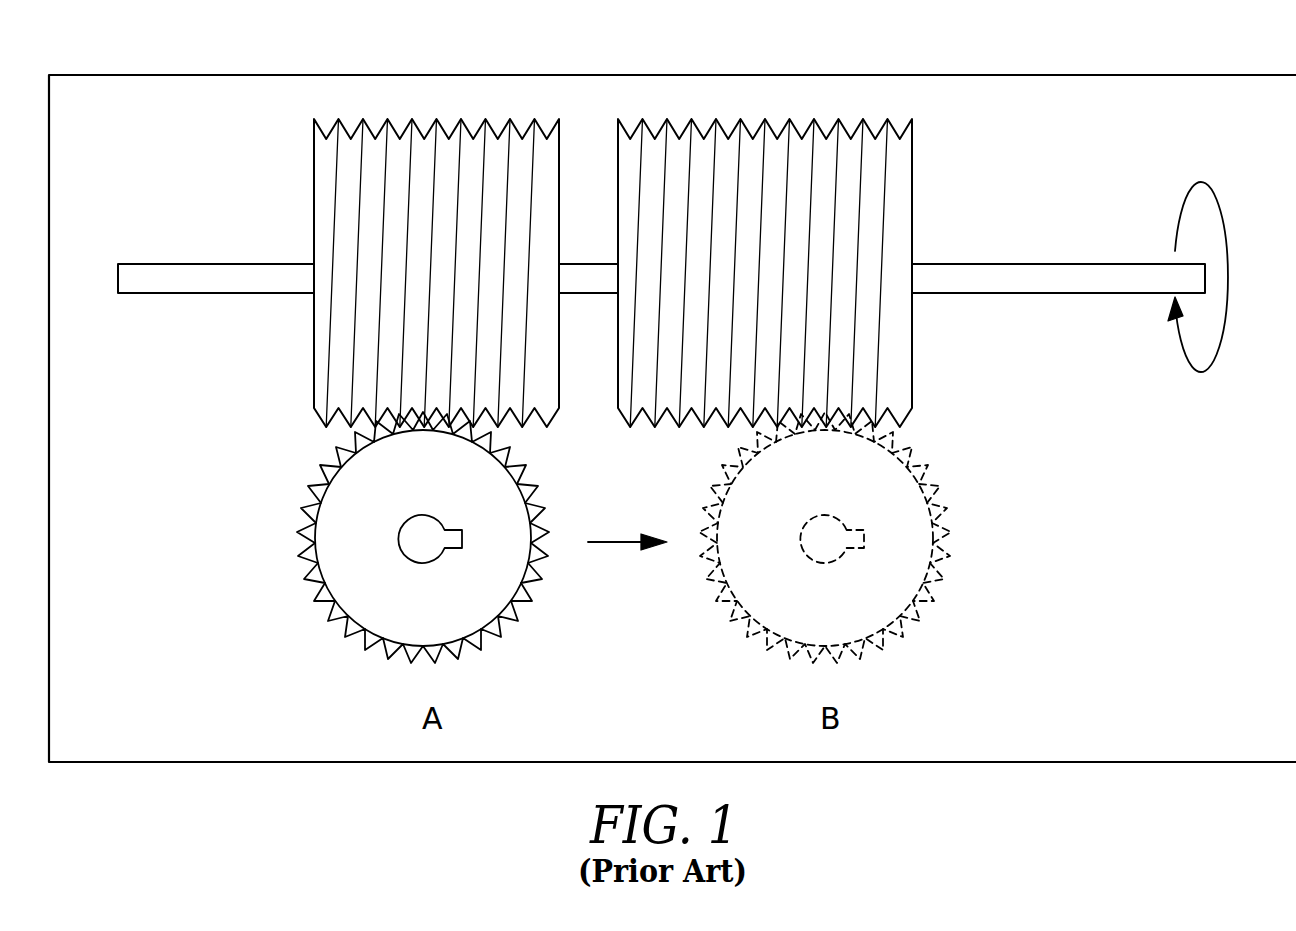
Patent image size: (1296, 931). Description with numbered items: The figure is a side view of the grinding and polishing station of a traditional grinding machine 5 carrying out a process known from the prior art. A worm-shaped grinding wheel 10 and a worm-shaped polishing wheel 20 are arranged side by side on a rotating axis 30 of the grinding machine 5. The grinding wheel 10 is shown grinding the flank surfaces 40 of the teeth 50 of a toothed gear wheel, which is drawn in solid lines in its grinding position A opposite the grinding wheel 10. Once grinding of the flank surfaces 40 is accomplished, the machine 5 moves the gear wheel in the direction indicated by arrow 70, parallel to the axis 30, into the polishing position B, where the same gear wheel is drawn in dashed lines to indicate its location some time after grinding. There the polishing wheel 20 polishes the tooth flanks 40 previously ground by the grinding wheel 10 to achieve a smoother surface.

The grinding machine 5 is at (1102, 74).
The worm-shaped grinding wheel 10 is at (314, 168).
The worm-shaped polishing wheel 20 is at (913, 156).
The rotating axis 30 is at (1092, 263).
The flank surfaces 40 is at (396, 545).
The teeth 50 is at (297, 567).
The arrow 70 is at (620, 543).